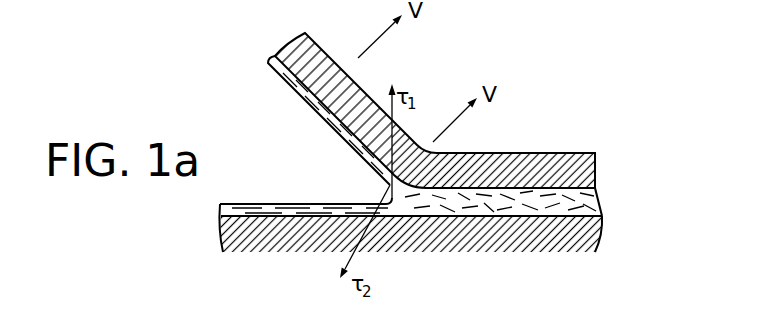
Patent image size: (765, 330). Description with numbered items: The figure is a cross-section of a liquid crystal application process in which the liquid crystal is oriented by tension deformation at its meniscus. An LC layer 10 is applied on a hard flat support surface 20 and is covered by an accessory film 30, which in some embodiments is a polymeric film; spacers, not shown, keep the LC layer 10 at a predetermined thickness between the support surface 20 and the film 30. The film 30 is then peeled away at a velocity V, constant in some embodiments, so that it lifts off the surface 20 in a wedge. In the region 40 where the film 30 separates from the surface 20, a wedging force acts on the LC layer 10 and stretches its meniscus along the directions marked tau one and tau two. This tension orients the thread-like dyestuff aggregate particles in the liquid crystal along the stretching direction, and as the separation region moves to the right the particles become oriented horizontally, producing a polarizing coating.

The LC layer 10 is at (600, 205).
The hard flat support surface 20 is at (497, 242).
The accessory film 30 is at (527, 162).
The region 40 is at (358, 185).